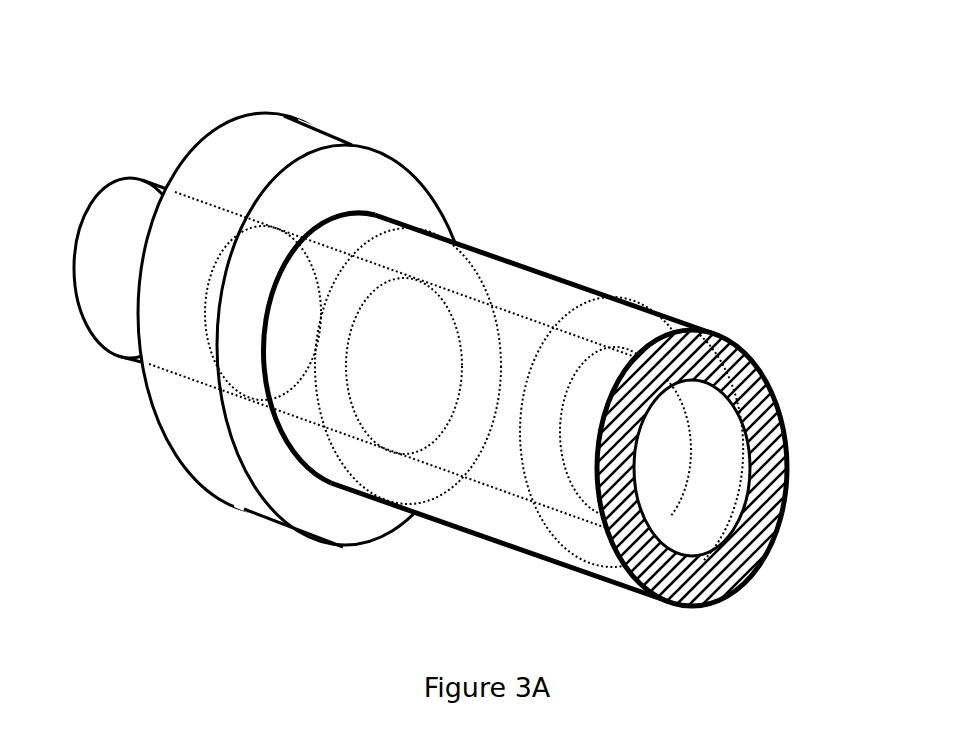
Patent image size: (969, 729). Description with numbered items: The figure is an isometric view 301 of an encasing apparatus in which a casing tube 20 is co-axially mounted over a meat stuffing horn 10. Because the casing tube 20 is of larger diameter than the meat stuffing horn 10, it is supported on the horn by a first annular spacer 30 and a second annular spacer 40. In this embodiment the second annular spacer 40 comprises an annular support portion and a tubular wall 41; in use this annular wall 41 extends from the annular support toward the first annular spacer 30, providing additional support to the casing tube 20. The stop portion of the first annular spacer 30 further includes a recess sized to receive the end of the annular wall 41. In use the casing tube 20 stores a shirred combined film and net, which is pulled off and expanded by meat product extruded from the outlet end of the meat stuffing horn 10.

The meat stuffing horn 10 is at (124, 178).
The first annular spacer 30 is at (318, 124).
The tubular wall 41 is at (578, 282).
The casing tube 20 is at (644, 467).
The second annular spacer 40 is at (744, 552).
The isometric view 301 is at (737, 176).